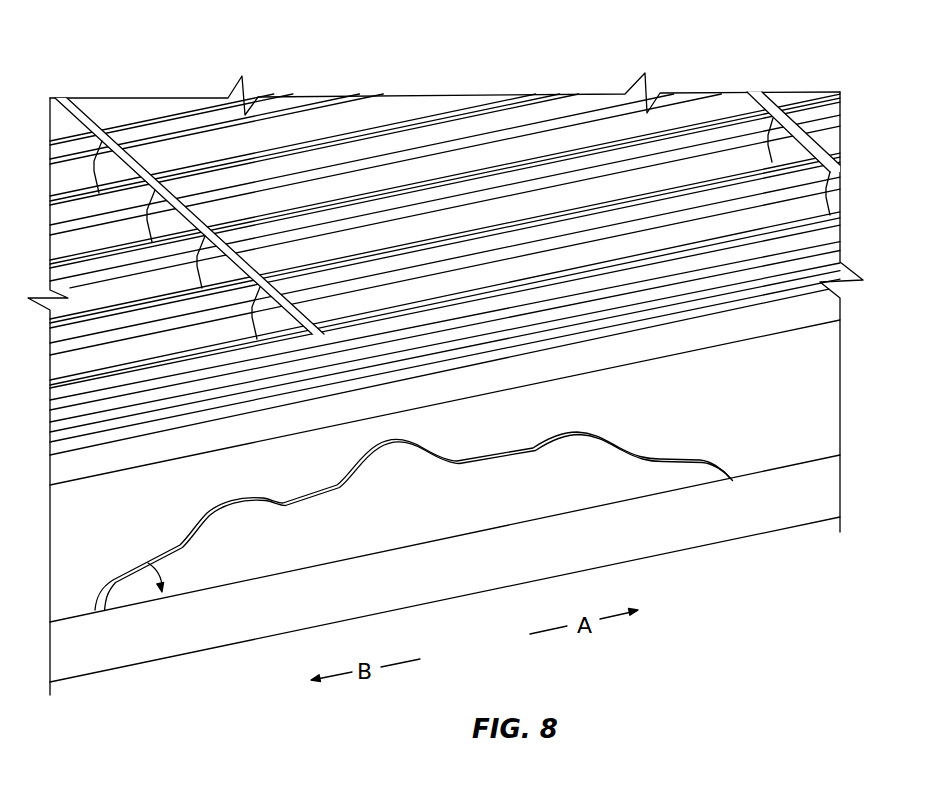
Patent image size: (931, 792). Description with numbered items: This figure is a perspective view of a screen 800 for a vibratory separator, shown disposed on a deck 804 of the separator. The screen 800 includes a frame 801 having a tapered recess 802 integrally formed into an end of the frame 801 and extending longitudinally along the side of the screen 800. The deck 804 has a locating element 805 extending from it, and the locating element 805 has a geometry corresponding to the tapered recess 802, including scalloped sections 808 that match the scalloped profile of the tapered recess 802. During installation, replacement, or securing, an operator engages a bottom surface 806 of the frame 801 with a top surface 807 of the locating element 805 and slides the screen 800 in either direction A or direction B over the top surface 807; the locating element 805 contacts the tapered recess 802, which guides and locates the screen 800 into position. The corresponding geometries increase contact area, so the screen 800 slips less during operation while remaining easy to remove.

The screen 800 is at (700, 58).
The frame 801 is at (503, 145).
The tapered recess 802 is at (571, 432).
The deck 804 is at (668, 533).
The locating element 805 is at (332, 549).
The bottom surface 806 is at (777, 483).
The top surface 807 is at (148, 563).
The scalloped sections 808 is at (418, 455).